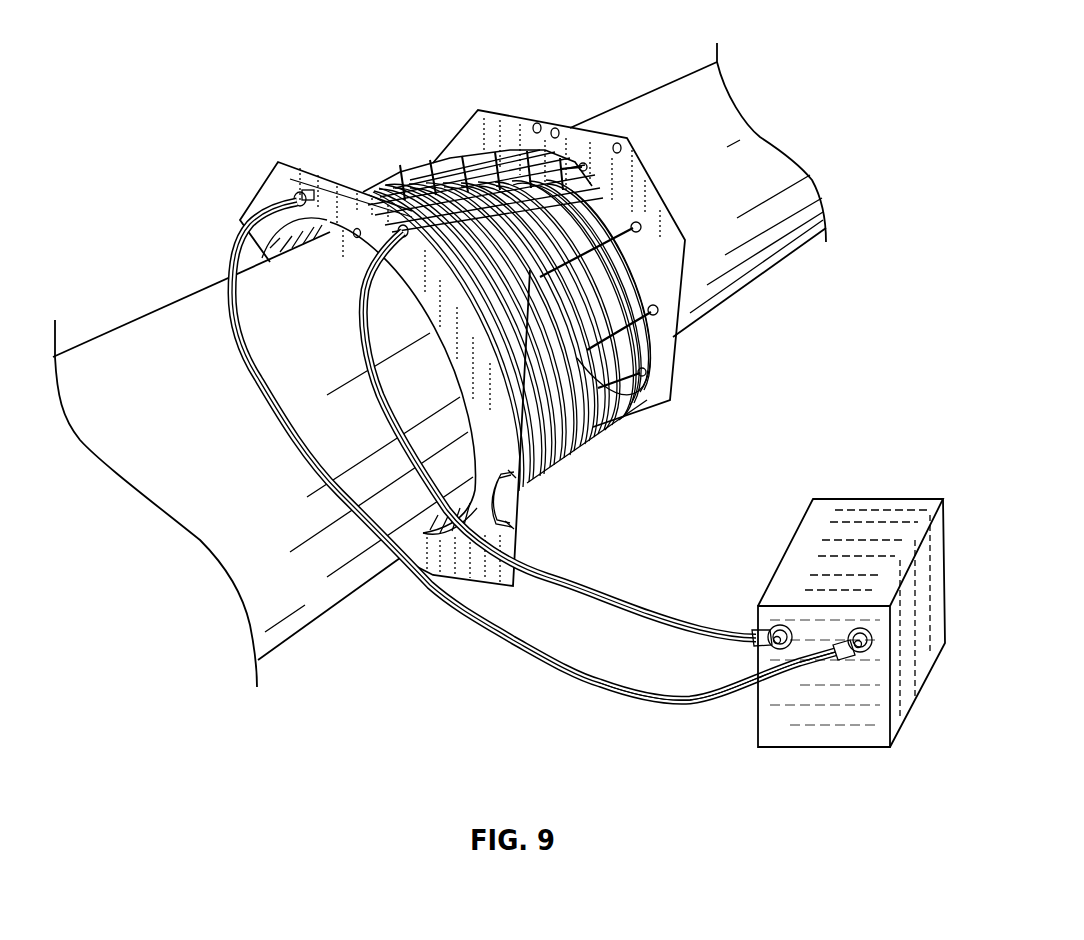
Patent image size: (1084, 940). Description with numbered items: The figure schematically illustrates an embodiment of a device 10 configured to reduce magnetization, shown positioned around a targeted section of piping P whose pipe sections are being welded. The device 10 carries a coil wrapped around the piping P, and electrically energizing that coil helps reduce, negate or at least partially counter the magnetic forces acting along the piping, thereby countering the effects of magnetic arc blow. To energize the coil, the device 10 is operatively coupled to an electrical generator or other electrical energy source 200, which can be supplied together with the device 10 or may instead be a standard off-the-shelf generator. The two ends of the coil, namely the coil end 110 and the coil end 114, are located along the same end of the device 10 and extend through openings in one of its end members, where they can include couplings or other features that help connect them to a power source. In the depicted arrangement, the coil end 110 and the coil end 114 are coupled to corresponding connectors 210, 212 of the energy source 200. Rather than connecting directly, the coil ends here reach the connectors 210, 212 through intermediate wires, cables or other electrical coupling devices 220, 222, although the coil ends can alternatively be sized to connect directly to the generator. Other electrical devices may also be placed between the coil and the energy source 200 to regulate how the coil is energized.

The device 10 is at (341, 126).
The piping P is at (672, 93).
The coil end 110 is at (476, 445).
The coil end 114 is at (234, 254).
The electrical energy source 200 is at (898, 513).
The connector 210 is at (776, 625).
The connector 212 is at (855, 628).
The electrical coupling device 220 is at (633, 600).
The electrical coupling device 222 is at (613, 695).